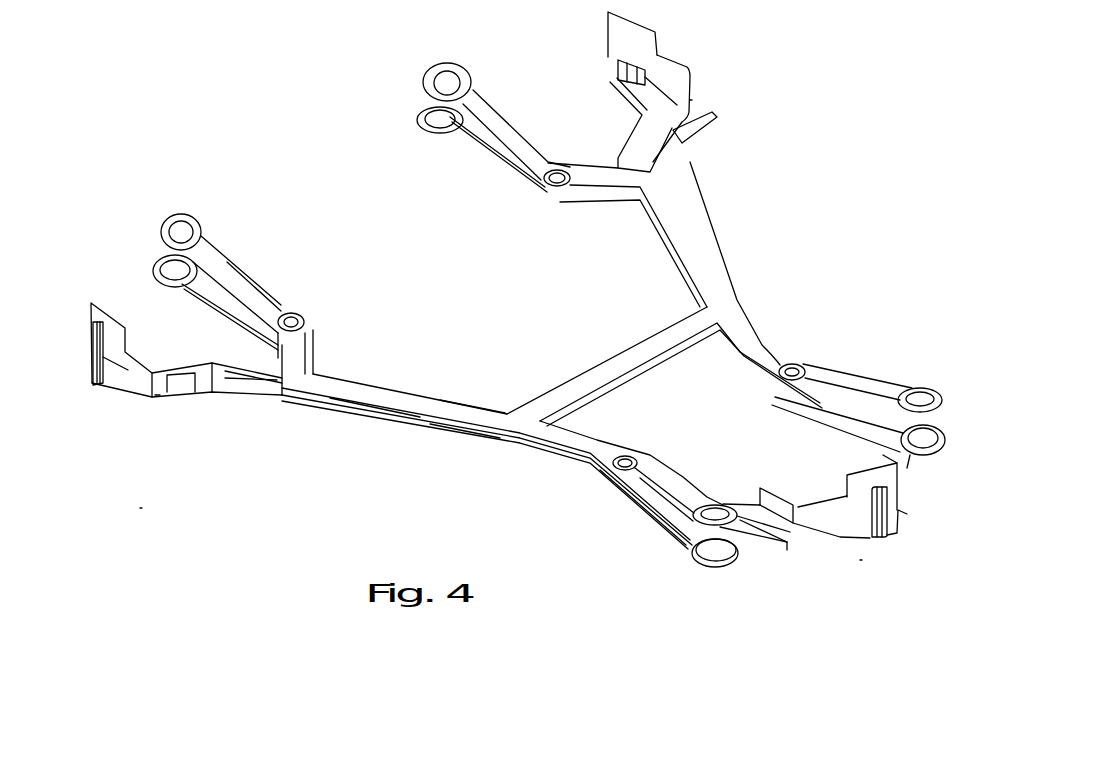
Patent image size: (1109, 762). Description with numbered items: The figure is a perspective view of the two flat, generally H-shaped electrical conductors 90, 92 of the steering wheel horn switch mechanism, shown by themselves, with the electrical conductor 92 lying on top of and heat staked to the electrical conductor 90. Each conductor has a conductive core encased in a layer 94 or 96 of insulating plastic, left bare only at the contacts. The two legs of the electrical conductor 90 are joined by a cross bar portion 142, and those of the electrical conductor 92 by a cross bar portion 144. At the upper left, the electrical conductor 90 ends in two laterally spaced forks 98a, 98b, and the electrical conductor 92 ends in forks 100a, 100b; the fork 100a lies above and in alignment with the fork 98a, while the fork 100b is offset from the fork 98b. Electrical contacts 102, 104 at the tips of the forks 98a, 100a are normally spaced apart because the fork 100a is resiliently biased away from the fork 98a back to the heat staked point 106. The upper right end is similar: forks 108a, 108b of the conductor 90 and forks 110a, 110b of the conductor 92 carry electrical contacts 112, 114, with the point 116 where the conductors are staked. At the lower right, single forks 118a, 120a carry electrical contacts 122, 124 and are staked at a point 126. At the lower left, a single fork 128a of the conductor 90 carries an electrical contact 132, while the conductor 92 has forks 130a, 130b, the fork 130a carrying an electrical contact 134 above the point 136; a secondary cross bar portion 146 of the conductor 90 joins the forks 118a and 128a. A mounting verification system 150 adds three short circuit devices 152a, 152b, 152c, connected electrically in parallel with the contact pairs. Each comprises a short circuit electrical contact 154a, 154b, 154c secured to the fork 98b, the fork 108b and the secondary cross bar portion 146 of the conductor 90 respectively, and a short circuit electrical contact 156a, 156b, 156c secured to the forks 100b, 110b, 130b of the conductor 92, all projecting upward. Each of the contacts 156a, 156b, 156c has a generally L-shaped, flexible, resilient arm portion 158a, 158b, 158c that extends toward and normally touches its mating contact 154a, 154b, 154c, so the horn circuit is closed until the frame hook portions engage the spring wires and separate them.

The electrical conductor 90 is at (443, 435).
The electrical conductor 92 is at (393, 413).
The layer of electrically insulating material 94 is at (478, 433).
The layer of electrically insulating material 96 is at (493, 417).
The fork 98a is at (237, 300).
The fork 98b is at (227, 375).
The fork 100a is at (227, 262).
The fork 100b is at (240, 393).
The electrical contact 102 is at (170, 263).
The electrical contact 104 is at (182, 233).
The point 106 is at (295, 318).
The fork 108a is at (477, 152).
The fork 108b is at (612, 122).
The fork 110a is at (497, 125).
The fork 110b is at (672, 165).
The electrical contact 112 is at (437, 117).
The electrical contact 114 is at (447, 83).
The point 116 is at (553, 185).
The fork 118a is at (873, 420).
The fork 120a is at (853, 387).
The electrical contact 122 is at (922, 442).
The electrical contact 124 is at (922, 398).
The point 126 is at (797, 373).
The fork 128a is at (668, 520).
The fork 130a is at (663, 490).
The fork 130b is at (690, 478).
The electrical contact 132 is at (722, 553).
The electrical contact 134 is at (695, 540).
The point 136 is at (610, 463).
The cross bar portion 142 is at (600, 393).
The cross bar portion 144 is at (607, 365).
The secondary cross bar portion 146 is at (840, 527).
The mounting verification system 150 is at (810, 41).
The short circuit device 152a is at (177, 505).
The short circuit device 152b is at (800, 76).
The short circuit device 152c is at (870, 578).
The short circuit electrical contact 154a is at (93, 347).
The short circuit electrical contact 154b is at (610, 62).
The short circuit electrical contact 154c is at (893, 515).
The short circuit electrical contact 156a is at (195, 380).
The short circuit electrical contact 156b is at (690, 100).
The short circuit electrical contact 156c is at (787, 550).
The arm portion 158a is at (137, 370).
The arm portion 158b is at (652, 63).
The arm portion 158c is at (833, 508).